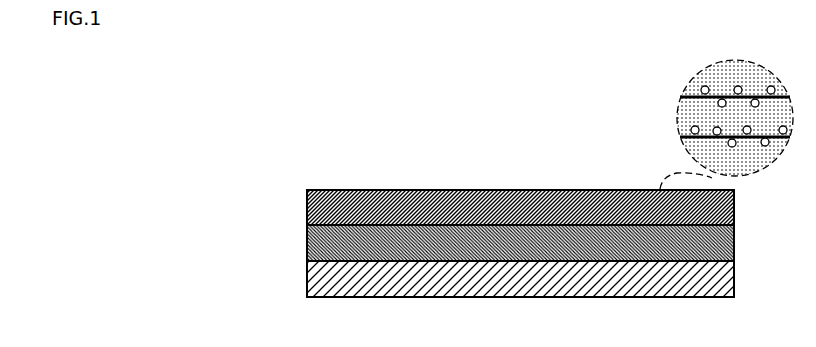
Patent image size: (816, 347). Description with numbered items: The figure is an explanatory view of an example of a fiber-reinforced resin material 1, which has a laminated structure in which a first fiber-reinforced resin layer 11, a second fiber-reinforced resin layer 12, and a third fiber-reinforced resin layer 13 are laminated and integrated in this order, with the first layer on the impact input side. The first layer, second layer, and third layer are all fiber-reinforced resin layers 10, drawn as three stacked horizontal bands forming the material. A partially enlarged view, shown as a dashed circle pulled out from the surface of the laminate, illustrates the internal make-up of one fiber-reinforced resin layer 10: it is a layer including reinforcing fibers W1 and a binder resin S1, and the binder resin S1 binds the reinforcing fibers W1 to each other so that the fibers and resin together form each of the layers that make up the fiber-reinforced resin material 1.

The fiber-reinforced resin material 1 is at (466, 211).
The fiber-reinforced resin layer 10 is at (705, 96).
The first fiber-reinforced resin layer 11 is at (307, 190).
The second fiber-reinforced resin layer 12 is at (307, 240).
The third fiber-reinforced resin layer 13 is at (307, 297).
The reinforcing fibers W1 is at (682, 95).
The binder resin S1 is at (753, 163).